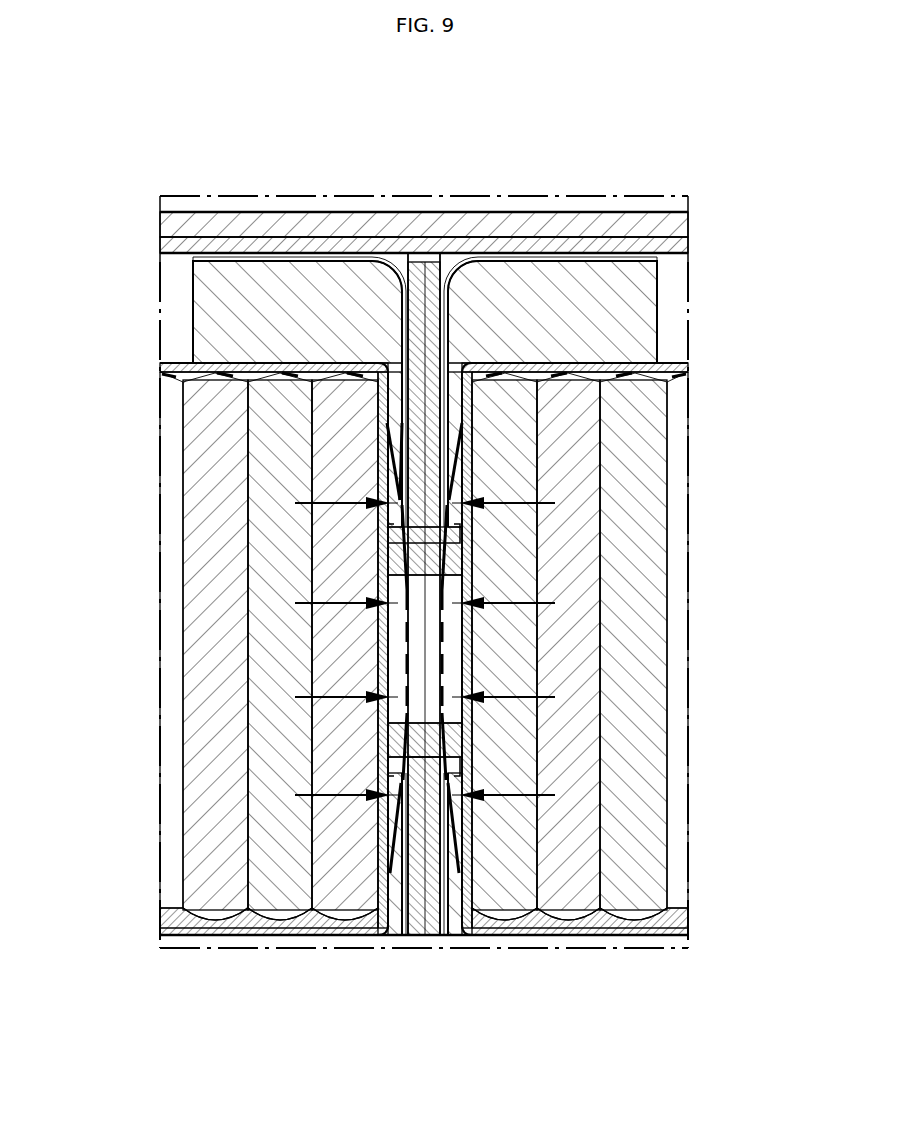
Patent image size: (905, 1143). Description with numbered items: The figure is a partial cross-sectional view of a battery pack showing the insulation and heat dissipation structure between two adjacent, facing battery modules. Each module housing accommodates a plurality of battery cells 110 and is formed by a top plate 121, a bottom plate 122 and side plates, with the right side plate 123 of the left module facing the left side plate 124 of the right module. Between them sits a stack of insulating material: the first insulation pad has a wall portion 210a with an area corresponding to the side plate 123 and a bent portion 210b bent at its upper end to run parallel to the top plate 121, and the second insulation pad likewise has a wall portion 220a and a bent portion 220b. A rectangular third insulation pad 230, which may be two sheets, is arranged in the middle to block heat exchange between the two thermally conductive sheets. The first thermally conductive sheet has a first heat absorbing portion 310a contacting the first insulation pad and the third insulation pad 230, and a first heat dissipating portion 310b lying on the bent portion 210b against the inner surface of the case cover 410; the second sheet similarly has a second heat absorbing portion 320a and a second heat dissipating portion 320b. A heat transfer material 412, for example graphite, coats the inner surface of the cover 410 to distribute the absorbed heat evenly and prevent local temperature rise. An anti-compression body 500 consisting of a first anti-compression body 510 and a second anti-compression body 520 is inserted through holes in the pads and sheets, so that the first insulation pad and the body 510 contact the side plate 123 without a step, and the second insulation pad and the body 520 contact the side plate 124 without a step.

The battery cell 110 is at (213, 888).
The top plate 121 is at (173, 364).
The bottom plate 122 is at (185, 930).
The right side plate 123 is at (372, 852).
The left side plate 124 is at (478, 852).
The wall portion 210a is at (390, 934).
The bent portion 210b is at (240, 297).
The wall portion 220a is at (460, 934).
The bent portion 220b is at (608, 297).
The third insulation pad 230 is at (424, 262).
The first heat absorbing portion 310a is at (403, 936).
The first heat dissipating portion 310b is at (320, 257).
The second heat absorbing portion 320a is at (447, 936).
The second heat dissipating portion 320b is at (530, 257).
The cover 410 is at (678, 222).
The heat transfer material 412 is at (678, 245).
The anti-compression body 500 is at (425, 472).
The first anti-compression body 510 is at (398, 563).
The second anti-compression body 520 is at (452, 563).